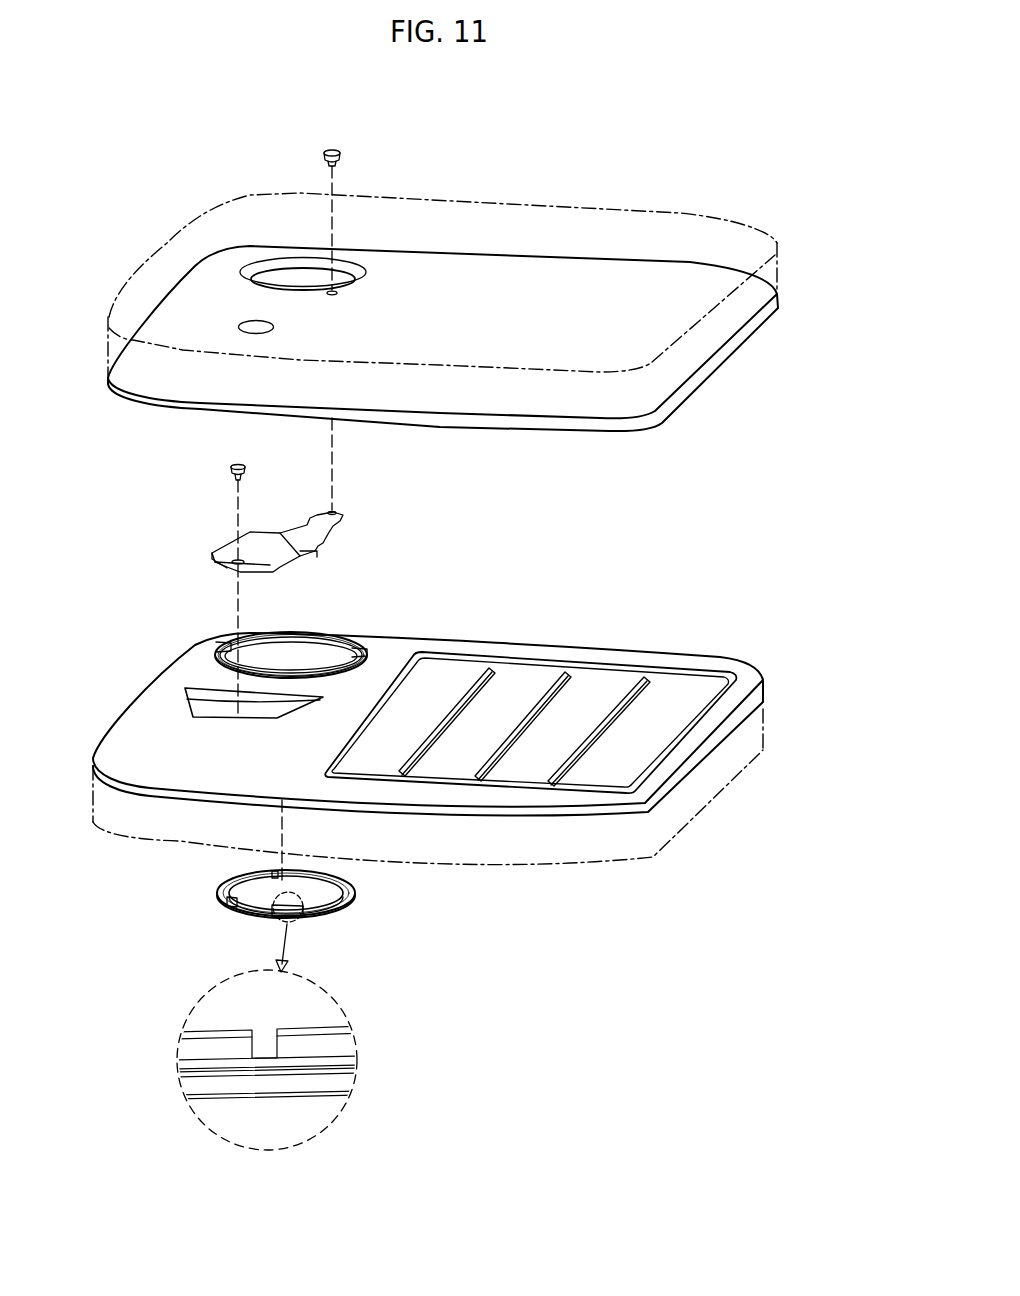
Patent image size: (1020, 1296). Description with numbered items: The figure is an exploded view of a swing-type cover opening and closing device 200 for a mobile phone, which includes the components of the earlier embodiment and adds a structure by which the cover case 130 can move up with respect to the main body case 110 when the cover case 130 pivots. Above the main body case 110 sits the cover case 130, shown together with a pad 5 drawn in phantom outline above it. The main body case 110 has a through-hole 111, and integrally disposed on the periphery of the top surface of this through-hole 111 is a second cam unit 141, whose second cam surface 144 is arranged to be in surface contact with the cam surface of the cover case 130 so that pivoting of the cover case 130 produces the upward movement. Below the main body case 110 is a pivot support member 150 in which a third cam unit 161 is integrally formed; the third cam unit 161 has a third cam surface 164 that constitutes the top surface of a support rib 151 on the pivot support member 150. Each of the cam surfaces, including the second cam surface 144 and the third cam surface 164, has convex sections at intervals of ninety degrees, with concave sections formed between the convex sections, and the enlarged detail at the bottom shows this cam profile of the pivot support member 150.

The swing-type cover opening and closing device 200 is at (459, 114).
The pad 5 is at (780, 253).
The cover case 130 is at (740, 352).
The main body case 110 is at (747, 717).
The through-hole 111 is at (284, 663).
The second cam unit 141 is at (346, 677).
The second cam surface 144 is at (243, 638).
The pivot support member 150 is at (368, 886).
The support rib 151 is at (340, 913).
The third cam unit 161 is at (221, 874).
The third cam surface 164 is at (233, 907).